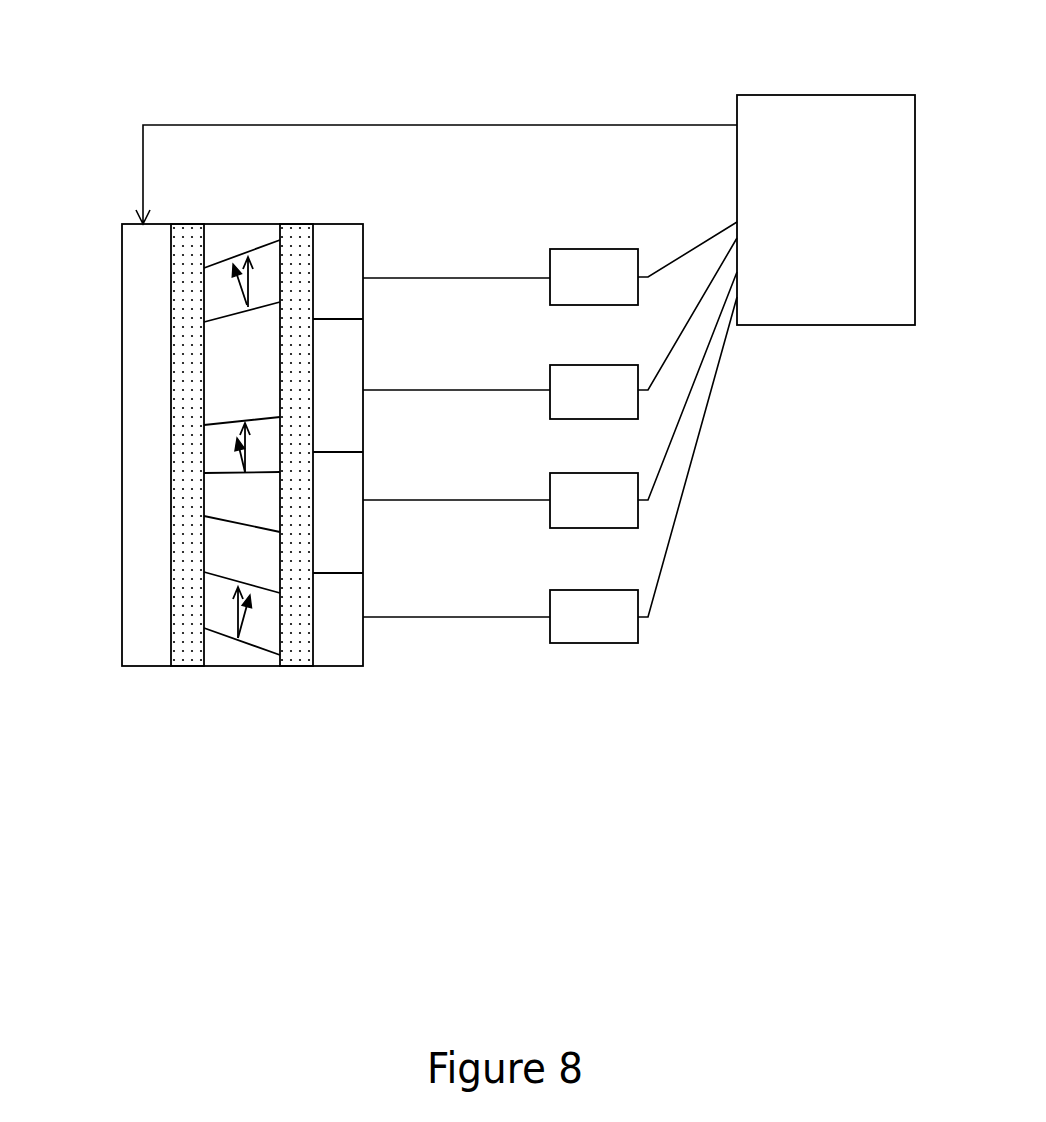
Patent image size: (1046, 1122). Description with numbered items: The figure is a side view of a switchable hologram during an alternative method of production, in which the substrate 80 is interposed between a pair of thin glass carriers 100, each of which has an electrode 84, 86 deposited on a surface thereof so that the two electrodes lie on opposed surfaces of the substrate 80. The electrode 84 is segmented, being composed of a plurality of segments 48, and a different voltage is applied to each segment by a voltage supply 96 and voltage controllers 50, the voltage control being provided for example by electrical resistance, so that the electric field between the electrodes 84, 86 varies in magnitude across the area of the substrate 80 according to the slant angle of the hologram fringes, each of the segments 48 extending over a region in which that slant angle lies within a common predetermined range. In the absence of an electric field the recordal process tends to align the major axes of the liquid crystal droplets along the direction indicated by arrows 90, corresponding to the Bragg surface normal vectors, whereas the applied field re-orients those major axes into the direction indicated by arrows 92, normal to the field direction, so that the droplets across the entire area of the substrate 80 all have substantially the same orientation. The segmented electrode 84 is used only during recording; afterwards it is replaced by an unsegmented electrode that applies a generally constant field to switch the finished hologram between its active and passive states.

The segments 48 is at (357, 257).
The voltage controllers 50 is at (593, 377).
The substrate 80 is at (273, 668).
The electrode 84 is at (345, 668).
The electrode 86 is at (132, 537).
The arrows 90 is at (247, 305).
The arrows 92 is at (245, 283).
The voltage supply 96 is at (817, 95).
The thin glass carriers 100 is at (186, 224).